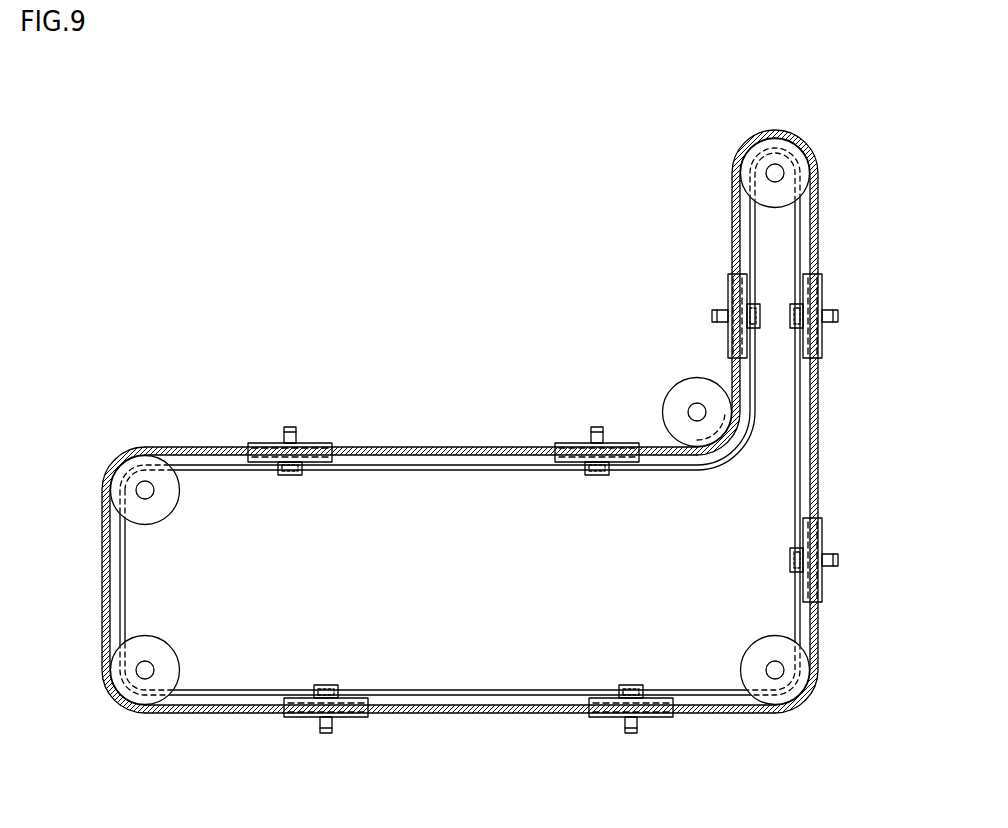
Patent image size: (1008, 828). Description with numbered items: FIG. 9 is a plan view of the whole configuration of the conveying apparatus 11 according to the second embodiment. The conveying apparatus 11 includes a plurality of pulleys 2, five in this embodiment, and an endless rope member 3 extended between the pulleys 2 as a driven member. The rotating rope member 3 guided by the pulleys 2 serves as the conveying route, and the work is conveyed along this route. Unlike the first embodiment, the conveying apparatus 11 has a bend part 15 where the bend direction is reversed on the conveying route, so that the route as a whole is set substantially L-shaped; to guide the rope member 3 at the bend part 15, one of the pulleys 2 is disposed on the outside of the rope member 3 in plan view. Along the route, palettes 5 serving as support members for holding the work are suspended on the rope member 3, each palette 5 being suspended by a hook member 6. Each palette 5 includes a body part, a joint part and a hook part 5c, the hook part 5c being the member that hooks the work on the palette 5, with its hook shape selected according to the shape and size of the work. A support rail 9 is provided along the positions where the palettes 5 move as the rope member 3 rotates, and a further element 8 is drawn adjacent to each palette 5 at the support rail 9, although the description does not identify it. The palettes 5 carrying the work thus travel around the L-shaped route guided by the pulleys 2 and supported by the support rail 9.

The conveying apparatus 11 is at (180, 157).
The bend part 15 is at (487, 353).
The pulley 2 is at (774, 218).
The rope member 3 is at (455, 446).
The support rail 9 is at (456, 703).
The palette 5 is at (329, 437).
The hook part 5c is at (289, 427).
The hook member 6 is at (263, 443).
The guide block 8 is at (283, 476).